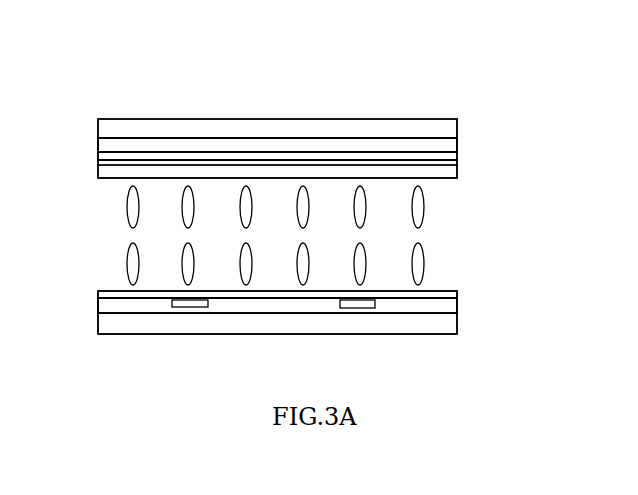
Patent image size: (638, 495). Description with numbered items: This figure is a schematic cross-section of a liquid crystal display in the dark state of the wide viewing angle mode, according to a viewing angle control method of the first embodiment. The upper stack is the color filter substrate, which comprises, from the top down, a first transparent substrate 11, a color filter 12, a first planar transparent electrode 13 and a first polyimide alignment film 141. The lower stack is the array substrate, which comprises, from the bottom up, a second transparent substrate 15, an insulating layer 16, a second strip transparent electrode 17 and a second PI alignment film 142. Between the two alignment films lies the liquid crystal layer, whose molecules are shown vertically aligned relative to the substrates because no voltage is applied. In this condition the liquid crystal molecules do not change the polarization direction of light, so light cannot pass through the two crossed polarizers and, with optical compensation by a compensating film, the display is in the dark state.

The first transparent substrate 11 is at (258, 128).
The color filter 12 is at (327, 150).
The first planar transparent electrode 13 is at (375, 157).
The first polyimide alignment film 141 is at (440, 171).
The second PI alignment film 142 is at (435, 296).
The second transparent substrate 15 is at (130, 323).
The insulating layer 16 is at (223, 308).
The second strip transparent electrode 17 is at (370, 307).